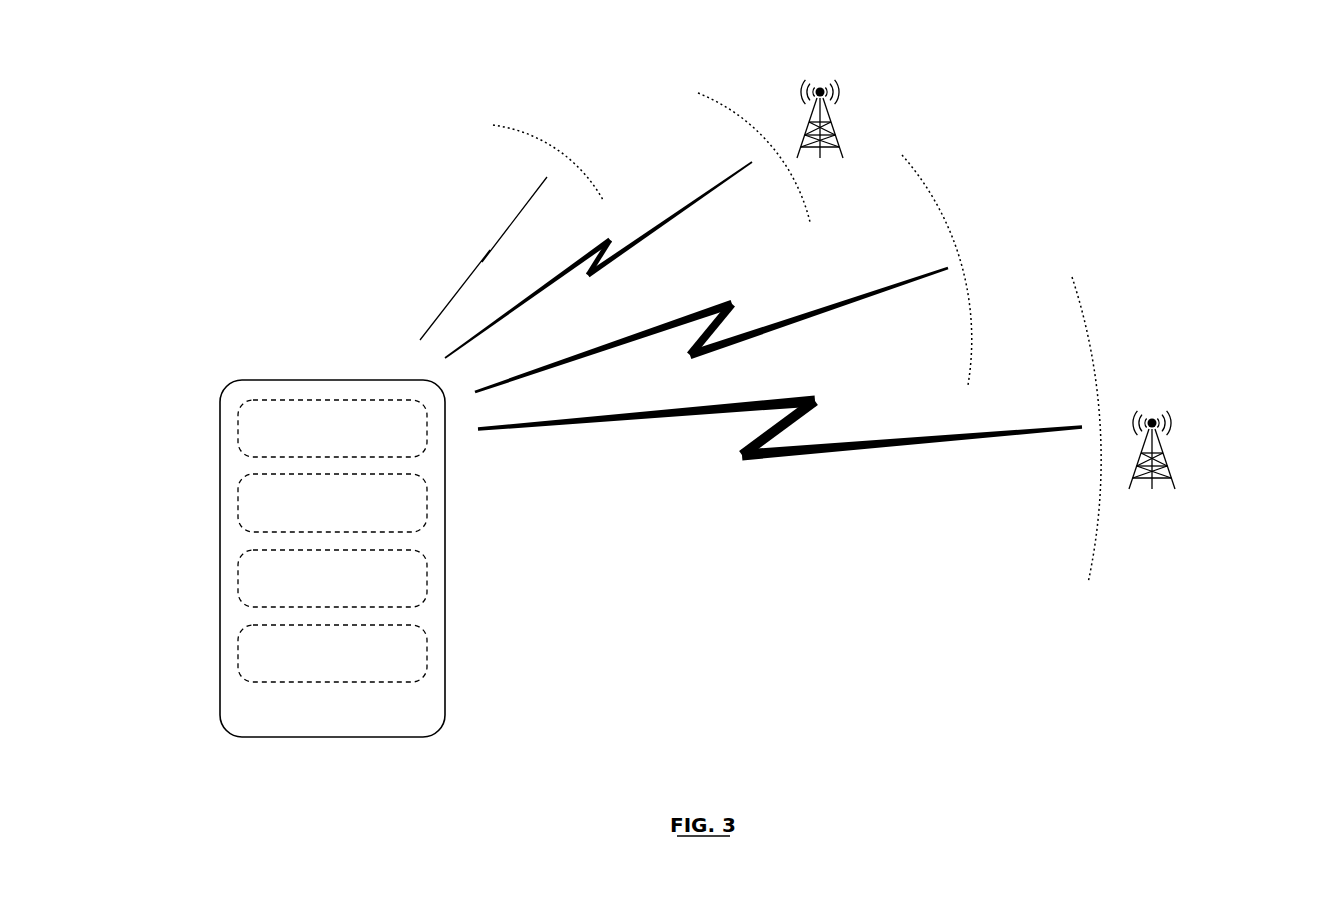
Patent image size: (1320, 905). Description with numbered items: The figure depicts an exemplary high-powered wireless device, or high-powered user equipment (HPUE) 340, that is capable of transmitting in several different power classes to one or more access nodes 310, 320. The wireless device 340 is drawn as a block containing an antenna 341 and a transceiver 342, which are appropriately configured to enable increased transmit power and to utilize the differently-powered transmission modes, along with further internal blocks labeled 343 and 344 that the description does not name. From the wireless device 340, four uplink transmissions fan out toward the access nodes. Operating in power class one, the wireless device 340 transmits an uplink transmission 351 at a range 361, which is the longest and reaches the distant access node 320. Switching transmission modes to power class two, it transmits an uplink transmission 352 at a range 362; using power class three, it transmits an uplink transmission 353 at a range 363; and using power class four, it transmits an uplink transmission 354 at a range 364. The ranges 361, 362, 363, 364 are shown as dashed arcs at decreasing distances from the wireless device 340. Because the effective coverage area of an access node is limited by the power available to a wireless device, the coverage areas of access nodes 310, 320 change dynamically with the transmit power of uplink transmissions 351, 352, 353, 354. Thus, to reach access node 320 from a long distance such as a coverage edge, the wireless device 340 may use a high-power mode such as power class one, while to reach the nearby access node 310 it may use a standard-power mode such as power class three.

The access node 310 is at (830, 130).
The access node 320 is at (1167, 470).
The high-powered user equipment (HPUE) 340 is at (237, 380).
The antenna 341 is at (238, 430).
The transceiver 342 is at (238, 505).
The memory 343 is at (238, 580).
The processor 344 is at (238, 655).
The uplink transmission 351 is at (932, 430).
The uplink transmission 352 is at (815, 308).
The uplink transmission 353 is at (712, 185).
The uplink transmission 354 is at (483, 257).
The range 361 is at (1078, 300).
The range 362 is at (908, 158).
The range 363 is at (718, 101).
The range 364 is at (505, 125).